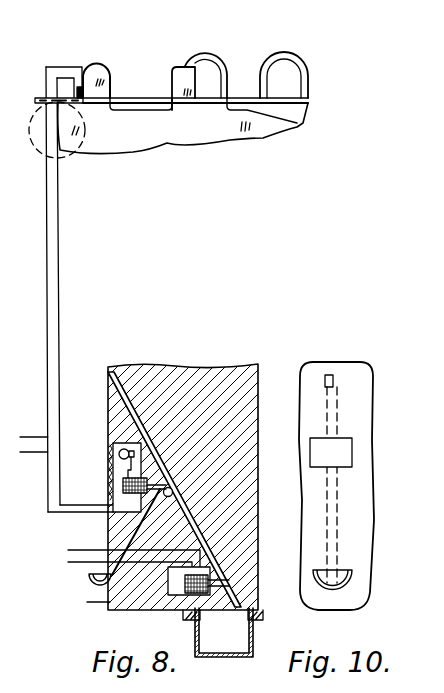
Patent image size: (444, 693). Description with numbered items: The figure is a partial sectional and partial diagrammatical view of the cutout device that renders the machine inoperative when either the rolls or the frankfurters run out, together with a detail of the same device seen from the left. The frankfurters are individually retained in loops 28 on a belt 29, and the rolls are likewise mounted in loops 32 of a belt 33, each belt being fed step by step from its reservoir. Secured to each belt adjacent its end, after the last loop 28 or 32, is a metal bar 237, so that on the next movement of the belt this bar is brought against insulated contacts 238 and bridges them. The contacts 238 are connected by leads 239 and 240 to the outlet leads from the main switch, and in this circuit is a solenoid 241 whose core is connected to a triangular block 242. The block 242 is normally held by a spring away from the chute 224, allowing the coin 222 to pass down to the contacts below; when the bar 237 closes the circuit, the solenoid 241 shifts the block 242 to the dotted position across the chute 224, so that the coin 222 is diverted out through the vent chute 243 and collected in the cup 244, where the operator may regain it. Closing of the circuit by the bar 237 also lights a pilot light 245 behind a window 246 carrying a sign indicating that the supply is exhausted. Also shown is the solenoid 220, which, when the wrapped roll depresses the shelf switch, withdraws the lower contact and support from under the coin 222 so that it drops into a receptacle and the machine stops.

In FIG. 8, the loops 28 is at (210, 56).
In FIG. 8, the loops 32 is at (248, 70).
In FIG. 8, the belt 29 is at (309, 100).
In FIG. 8, the belt 33 is at (213, 102).
In FIG. 8, the metal bar 237 is at (73, 86).
In FIG. 8, the insulated contacts 238 is at (84, 93).
In FIG. 8, the lead 239 is at (46, 338).
In FIG. 8, the lead 240 is at (46, 512).
In FIG. 8, the chute 224 is at (128, 412).
In FIG. 10, the chute 224 is at (338, 521).
In FIG. 8, the pilot light 245 is at (113, 445).
In FIG. 8, the window 246 is at (108, 463).
In FIG. 10, the window 246 is at (310, 456).
In FIG. 8, the solenoid 241 is at (123, 488).
In FIG. 8, the triangular block 242 is at (175, 492).
In FIG. 8, the vent chute 243 is at (133, 530).
In FIG. 8, the cup 244 is at (92, 575).
In FIG. 10, the cup 244 is at (347, 581).
In FIG. 8, the coin 222 is at (229, 573).
In FIG. 8, the solenoid 220 is at (195, 616).